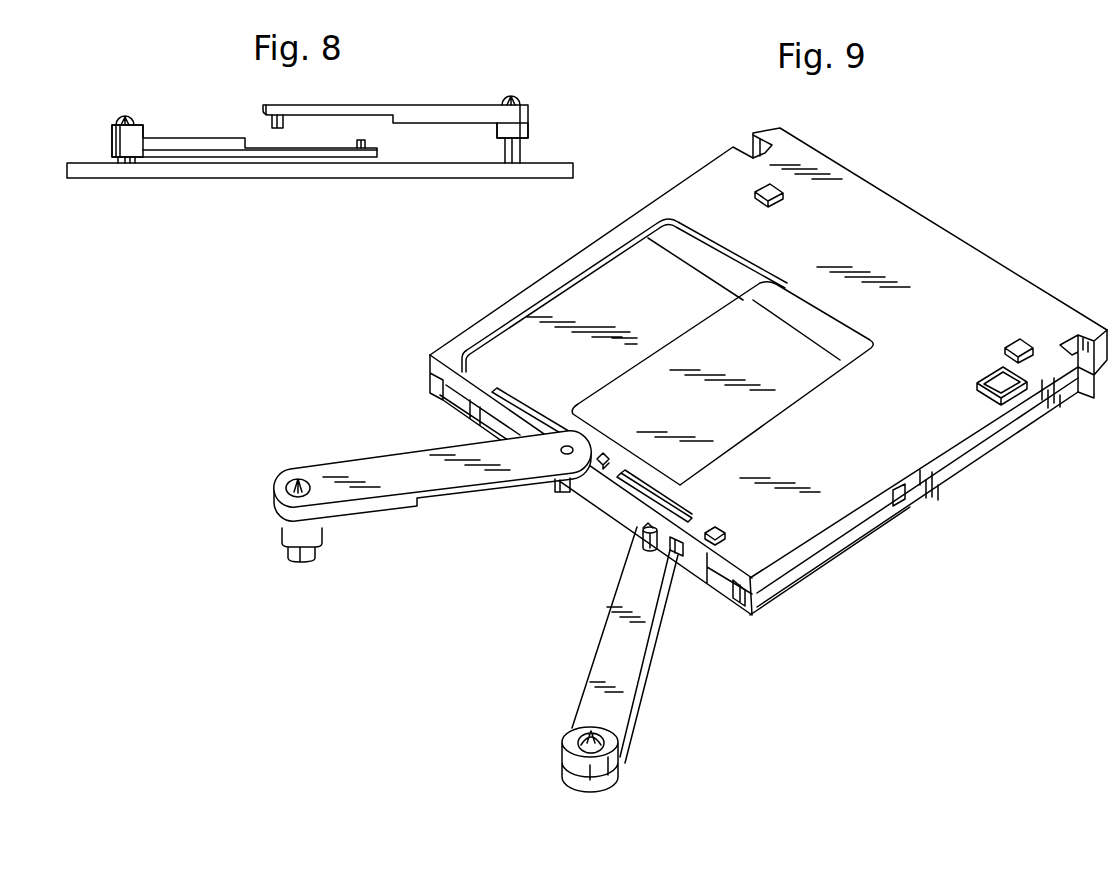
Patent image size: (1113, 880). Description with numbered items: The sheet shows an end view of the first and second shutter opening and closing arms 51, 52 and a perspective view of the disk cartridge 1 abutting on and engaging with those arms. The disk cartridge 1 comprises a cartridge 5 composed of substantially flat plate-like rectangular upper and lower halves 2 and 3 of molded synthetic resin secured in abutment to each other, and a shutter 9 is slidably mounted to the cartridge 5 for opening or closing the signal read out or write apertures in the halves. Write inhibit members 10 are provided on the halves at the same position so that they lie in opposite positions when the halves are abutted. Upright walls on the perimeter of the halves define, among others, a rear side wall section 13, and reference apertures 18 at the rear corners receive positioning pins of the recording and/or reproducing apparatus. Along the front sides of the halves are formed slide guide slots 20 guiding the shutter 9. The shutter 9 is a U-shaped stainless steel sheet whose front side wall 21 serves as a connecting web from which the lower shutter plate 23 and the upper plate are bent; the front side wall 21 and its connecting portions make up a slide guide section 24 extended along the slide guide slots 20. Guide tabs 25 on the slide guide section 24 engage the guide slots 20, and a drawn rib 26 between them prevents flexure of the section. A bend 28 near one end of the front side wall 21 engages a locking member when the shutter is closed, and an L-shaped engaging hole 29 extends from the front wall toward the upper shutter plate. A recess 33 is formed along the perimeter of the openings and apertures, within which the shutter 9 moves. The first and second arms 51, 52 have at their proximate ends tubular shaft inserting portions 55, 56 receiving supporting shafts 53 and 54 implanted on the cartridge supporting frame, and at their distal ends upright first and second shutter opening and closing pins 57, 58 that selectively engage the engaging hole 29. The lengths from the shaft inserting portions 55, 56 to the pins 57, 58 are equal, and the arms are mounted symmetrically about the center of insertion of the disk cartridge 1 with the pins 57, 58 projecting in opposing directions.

In FIG. 9, the disk cartridge 1 is at (693, 180).
In FIG. 9, the upper half 2 is at (953, 472).
In FIG. 9, the lower half 3 is at (967, 442).
In FIG. 9, the cartridge 5 is at (1027, 468).
In FIG. 9, the shutter 9 is at (800, 392).
In FIG. 9, the write inhibit member 10 is at (1008, 392).
In FIG. 9, the rear side wall section 13 is at (910, 215).
In FIG. 9, the reference aperture 18 is at (775, 190).
In FIG. 9, the slide guide slot 20 is at (535, 405).
In FIG. 9, the front side wall 21 is at (597, 503).
In FIG. 9, the lower shutter plate 23 is at (820, 368).
In FIG. 9, the slide guide section 24 is at (713, 545).
In FIG. 9, the guide tab 25 is at (600, 455).
In FIG. 9, the rib 26 is at (640, 490).
In FIG. 9, the bend 28 is at (672, 555).
In FIG. 9, the engaging hole 29 is at (648, 527).
In FIG. 9, the recess 33 is at (592, 263).
In FIG. 8, the first shutter opening and closing arm 51 is at (202, 139).
In FIG. 9, the first shutter opening and closing arm 51 is at (633, 654).
In FIG. 8, the second shutter opening and closing arm 52 is at (372, 108).
In FIG. 9, the second shutter opening and closing arm 52 is at (397, 467).
In FIG. 8, the supporting shaft 53 is at (127, 116).
In FIG. 9, the supporting shaft 53 is at (575, 746).
In FIG. 8, the supporting shaft 54 is at (517, 98).
In FIG. 9, the supporting shaft 54 is at (298, 480).
In FIG. 8, the tubular shaft inserting portion 55 is at (114, 132).
In FIG. 9, the tubular shaft inserting portion 55 is at (575, 770).
In FIG. 8, the tubular shaft inserting portion 56 is at (527, 128).
In FIG. 9, the tubular shaft inserting portion 56 is at (302, 545).
In FIG. 8, the first shutter opening and closing pin 57 is at (368, 142).
In FIG. 9, the first shutter opening and closing pin 57 is at (636, 528).
In FIG. 8, the second shutter opening and closing pin 58 is at (285, 125).
In FIG. 9, the second shutter opening and closing pin 58 is at (558, 492).